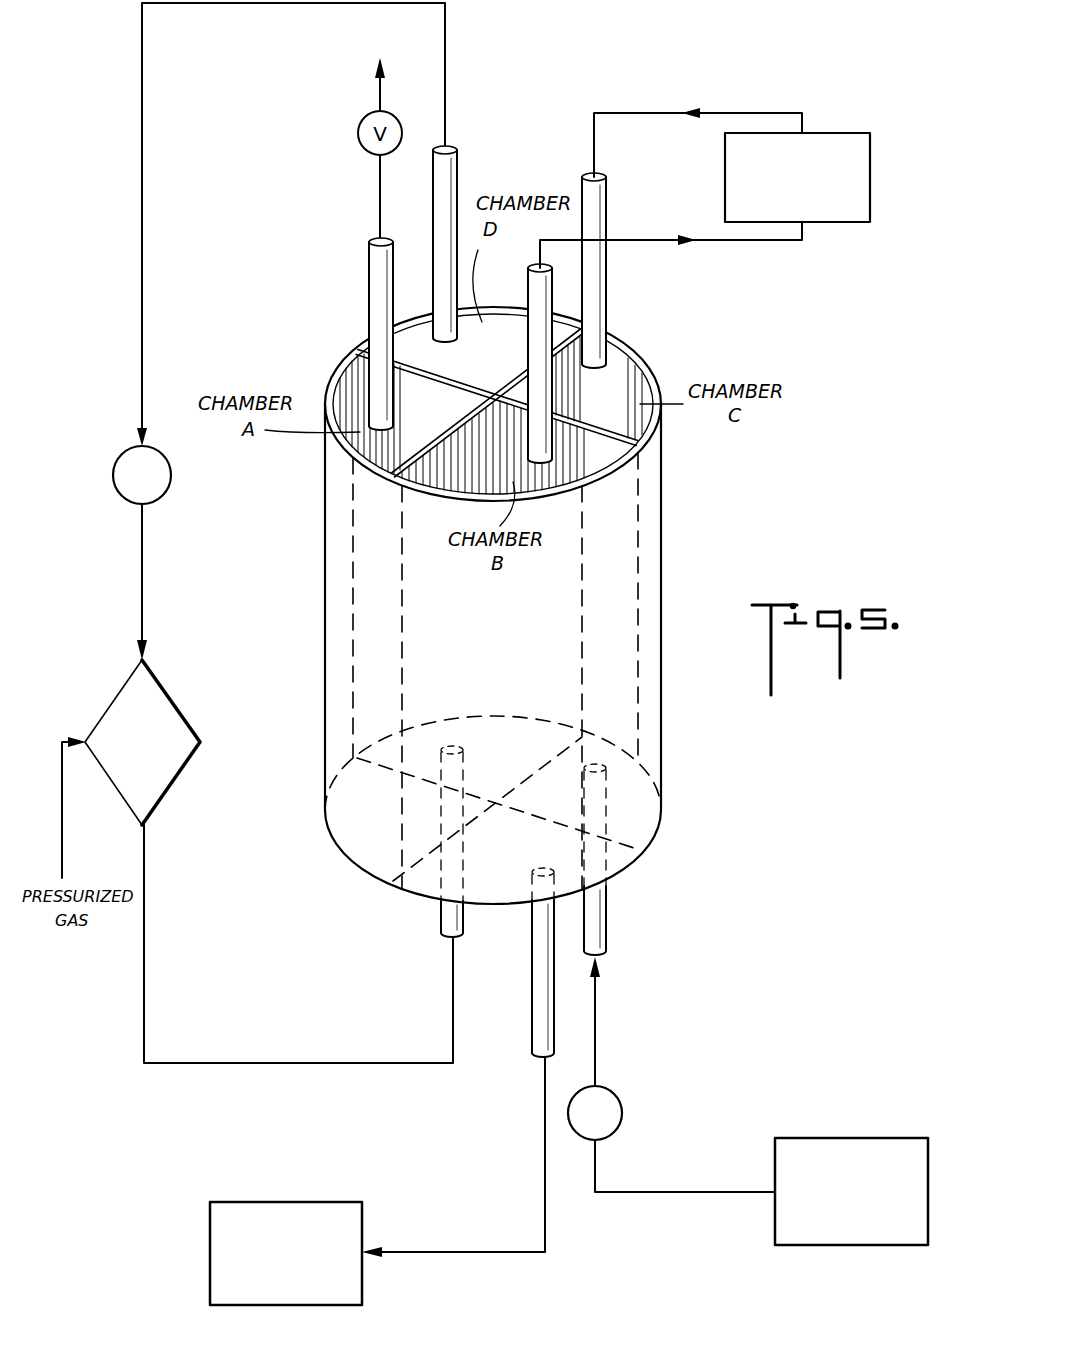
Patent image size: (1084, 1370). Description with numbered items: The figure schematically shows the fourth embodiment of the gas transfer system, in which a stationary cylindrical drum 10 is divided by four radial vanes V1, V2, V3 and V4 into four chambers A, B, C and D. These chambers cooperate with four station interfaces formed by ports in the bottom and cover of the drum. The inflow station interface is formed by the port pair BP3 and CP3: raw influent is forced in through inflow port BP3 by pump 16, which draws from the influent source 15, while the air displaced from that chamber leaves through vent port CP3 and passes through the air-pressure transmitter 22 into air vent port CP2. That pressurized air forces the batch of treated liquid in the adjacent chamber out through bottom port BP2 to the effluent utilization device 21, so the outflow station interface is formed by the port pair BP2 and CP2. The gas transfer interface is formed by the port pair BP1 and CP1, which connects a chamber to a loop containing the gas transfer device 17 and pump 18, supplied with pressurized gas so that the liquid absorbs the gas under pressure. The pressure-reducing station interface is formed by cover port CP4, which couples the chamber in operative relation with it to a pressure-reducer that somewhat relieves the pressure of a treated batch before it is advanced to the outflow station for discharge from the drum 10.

The cylindrical drum 10 is at (661, 540).
The influent source 15 is at (853, 1138).
The pump 16 is at (622, 1118).
The gas transfer device 17 is at (192, 722).
The pump 18 is at (165, 490).
The effluent utilization device 21 is at (364, 1208).
The air-pressure transmitter 22 is at (868, 133).
The cover port CP1 is at (458, 197).
The air vent port CP2 is at (528, 285).
The vent port CP3 is at (606, 300).
The cover port CP4 is at (368, 290).
The bottom port BP1 is at (441, 930).
The bottom port BP2 is at (540, 1050).
The inflow port BP3 is at (606, 925).
The vane V1 is at (428, 377).
The vane V2 is at (517, 370).
The vane V3 is at (598, 428).
The vane V4 is at (437, 445).